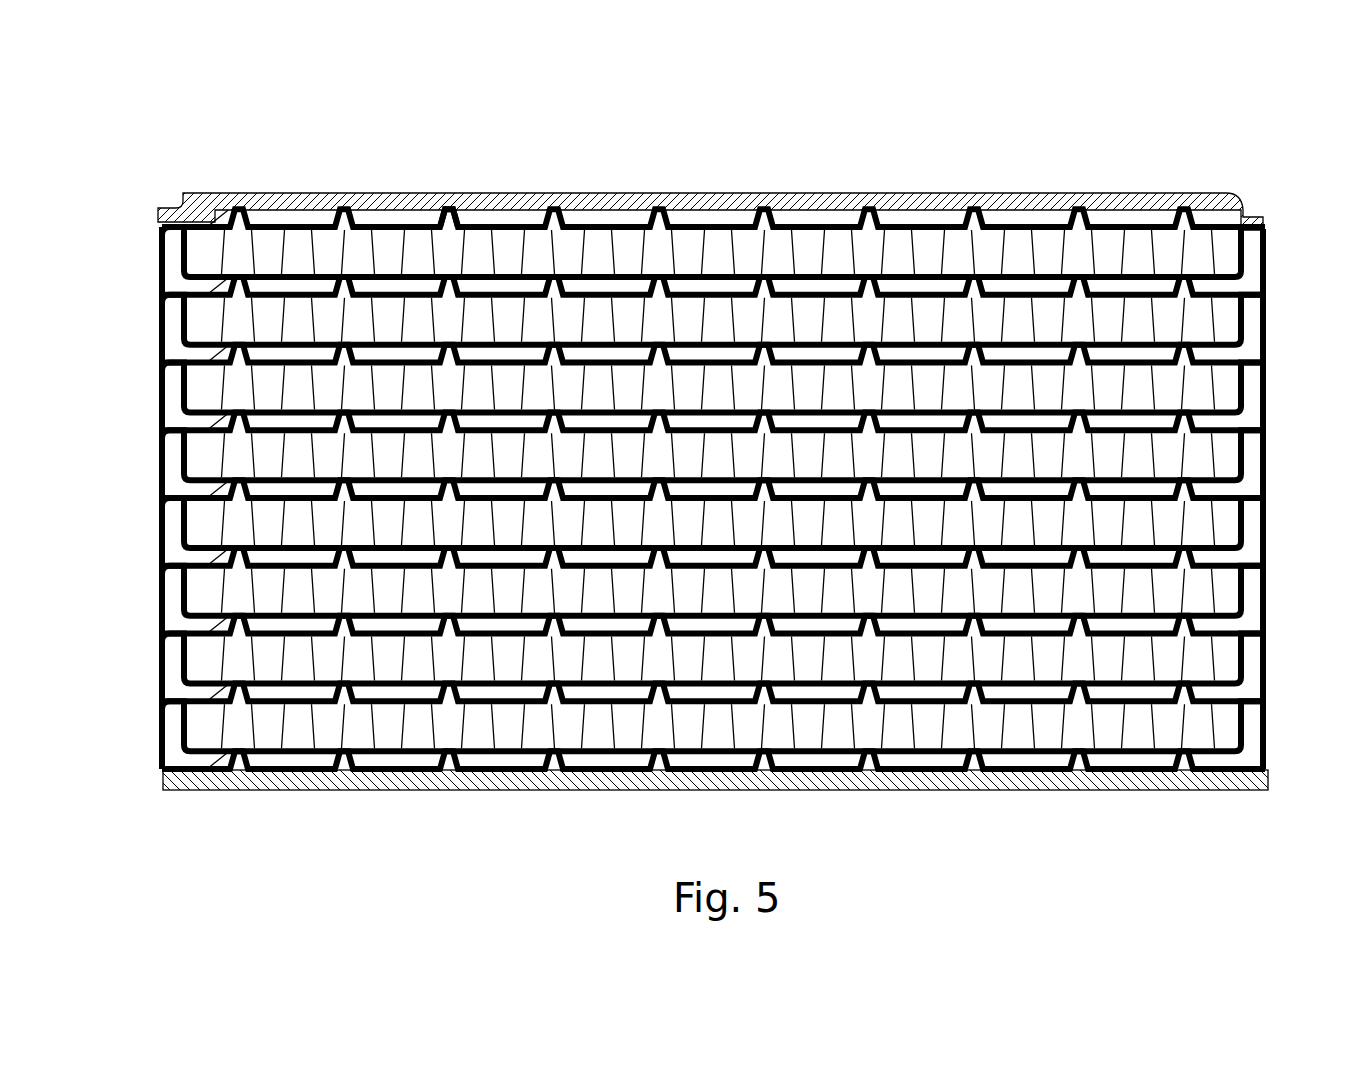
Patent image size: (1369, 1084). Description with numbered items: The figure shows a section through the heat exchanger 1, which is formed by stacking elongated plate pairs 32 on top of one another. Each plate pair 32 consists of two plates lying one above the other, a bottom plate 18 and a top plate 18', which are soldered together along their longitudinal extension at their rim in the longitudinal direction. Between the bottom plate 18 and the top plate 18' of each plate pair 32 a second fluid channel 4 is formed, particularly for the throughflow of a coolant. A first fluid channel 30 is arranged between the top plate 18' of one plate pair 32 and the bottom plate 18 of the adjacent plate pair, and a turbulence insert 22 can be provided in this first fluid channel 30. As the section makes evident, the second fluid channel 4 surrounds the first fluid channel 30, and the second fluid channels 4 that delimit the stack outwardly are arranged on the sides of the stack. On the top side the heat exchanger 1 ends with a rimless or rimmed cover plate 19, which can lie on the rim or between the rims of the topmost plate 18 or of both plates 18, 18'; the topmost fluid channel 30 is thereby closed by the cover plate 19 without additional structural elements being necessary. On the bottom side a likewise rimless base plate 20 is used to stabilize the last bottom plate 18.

The heat exchanger 1 is at (704, 484).
The second fluid channel 4 is at (172, 337).
The bottom plate 18 is at (713, 439).
The top plate 18' is at (459, 168).
The cover plate 19 is at (695, 207).
The base plate 20 is at (590, 792).
The turbulence insert 22 is at (585, 245).
The first fluid channel 30 is at (240, 247).
The plate pair 32 is at (170, 383).